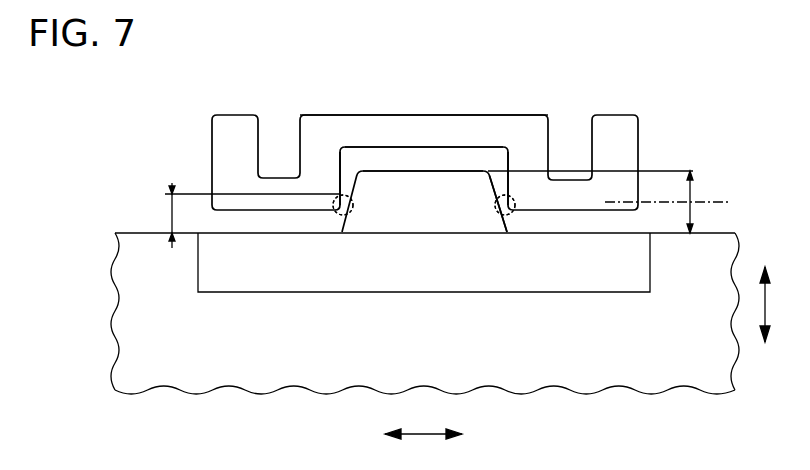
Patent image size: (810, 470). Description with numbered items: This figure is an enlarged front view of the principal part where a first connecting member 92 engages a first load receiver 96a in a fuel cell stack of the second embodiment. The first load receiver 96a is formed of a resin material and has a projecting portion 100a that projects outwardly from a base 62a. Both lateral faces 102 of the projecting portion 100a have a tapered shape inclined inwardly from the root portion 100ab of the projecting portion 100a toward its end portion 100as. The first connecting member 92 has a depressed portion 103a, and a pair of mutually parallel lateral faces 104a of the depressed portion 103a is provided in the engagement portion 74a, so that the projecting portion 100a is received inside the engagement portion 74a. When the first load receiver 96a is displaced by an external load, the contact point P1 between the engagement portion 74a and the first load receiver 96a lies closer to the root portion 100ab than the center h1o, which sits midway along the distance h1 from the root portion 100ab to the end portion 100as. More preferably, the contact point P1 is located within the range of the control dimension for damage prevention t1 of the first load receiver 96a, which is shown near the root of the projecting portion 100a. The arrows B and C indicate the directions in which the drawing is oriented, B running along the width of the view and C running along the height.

The first connecting member 92 is at (513, 115).
The engagement portion 74a is at (375, 125).
The depressed portion 103a is at (350, 160).
The end portion 100as is at (437, 170).
The lateral faces of the depressed portion 104a is at (343, 178).
The lateral faces of the projecting portion 102 is at (337, 207).
The projecting portion 100a is at (419, 207).
The root portion 100ab is at (497, 233).
The contact point P1 is at (350, 215).
The first load receiver 96a is at (262, 292).
The base 62a is at (589, 287).
The control dimension for damage prevention t1 is at (164, 215).
The distance from root portion to end portion h1 is at (606, 202).
The center h1o is at (688, 202).
The direction B is at (423, 423).
The direction C is at (773, 304).